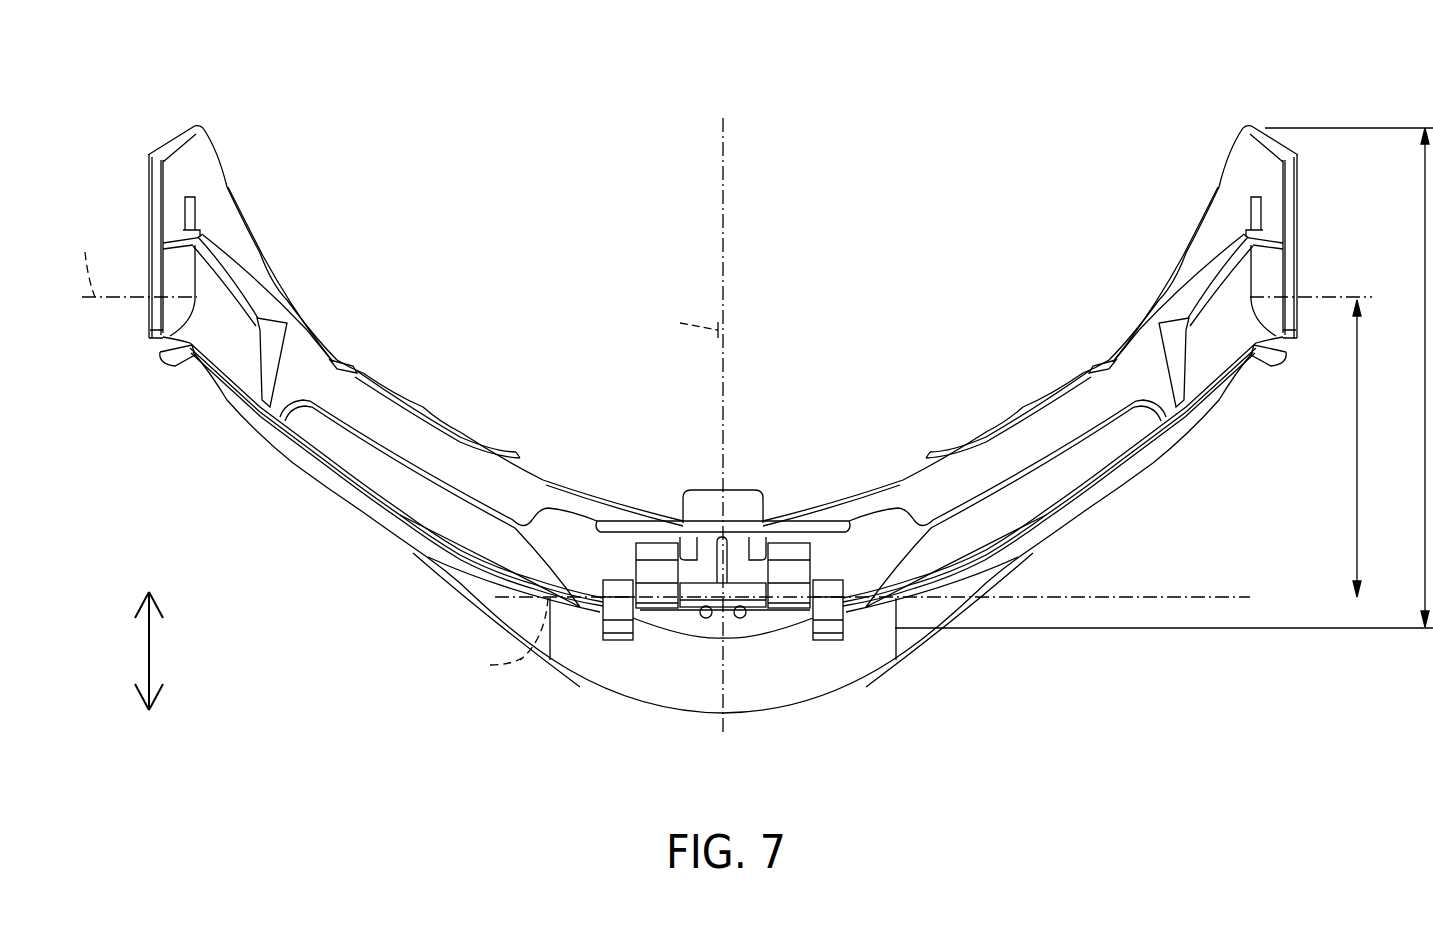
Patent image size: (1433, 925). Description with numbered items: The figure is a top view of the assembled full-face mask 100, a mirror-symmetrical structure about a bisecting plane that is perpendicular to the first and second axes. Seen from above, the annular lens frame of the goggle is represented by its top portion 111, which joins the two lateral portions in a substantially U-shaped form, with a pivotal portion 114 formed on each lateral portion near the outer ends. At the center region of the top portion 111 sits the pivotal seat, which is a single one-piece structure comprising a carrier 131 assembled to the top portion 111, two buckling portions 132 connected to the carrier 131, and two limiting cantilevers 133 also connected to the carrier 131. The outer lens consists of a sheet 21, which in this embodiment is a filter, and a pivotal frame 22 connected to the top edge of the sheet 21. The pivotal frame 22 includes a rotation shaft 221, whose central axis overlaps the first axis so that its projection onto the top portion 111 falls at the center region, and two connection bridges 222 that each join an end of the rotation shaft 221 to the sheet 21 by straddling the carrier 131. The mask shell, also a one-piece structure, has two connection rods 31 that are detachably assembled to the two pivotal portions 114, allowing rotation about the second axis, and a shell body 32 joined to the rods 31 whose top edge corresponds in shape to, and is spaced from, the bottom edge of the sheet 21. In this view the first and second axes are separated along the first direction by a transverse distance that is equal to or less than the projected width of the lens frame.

The assembled full-face mask 100 is at (198, 47).
The sheet 21 is at (1150, 471).
The pivotal frame 22 is at (710, 697).
The connection rod 31 is at (1298, 281).
The shell body 32 is at (857, 687).
The top portion 111 is at (1048, 490).
The pivotal portion 114 is at (1270, 275).
The carrier 131 is at (835, 548).
The buckling portion 132 is at (665, 585).
The limiting cantilever 133 is at (742, 618).
The rotation shaft 221 is at (698, 596).
The connection bridge 222 is at (712, 772).